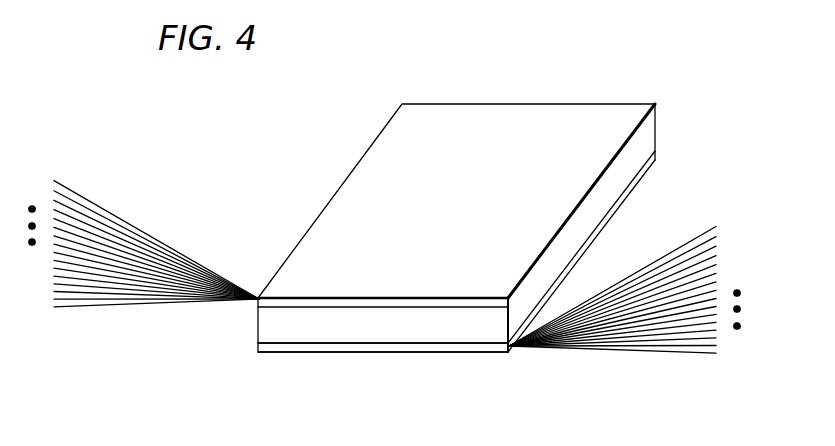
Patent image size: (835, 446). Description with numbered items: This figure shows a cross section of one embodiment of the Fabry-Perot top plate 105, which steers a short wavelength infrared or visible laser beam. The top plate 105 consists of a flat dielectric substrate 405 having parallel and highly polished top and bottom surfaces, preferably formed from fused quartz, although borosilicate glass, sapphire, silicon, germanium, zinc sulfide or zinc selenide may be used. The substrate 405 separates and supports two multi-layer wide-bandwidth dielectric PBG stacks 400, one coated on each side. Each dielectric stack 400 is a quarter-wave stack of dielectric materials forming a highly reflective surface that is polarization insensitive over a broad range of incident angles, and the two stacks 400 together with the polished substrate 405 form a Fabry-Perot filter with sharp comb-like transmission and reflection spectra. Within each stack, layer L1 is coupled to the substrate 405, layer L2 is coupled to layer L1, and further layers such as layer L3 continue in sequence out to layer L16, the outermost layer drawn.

The Fabry-Perot top plate 105 is at (284, 128).
The dielectric PBG stack 400 is at (258, 348).
The substrate 405 is at (258, 322).
The layer L1 is at (384, 278).
The layer L2 is at (384, 289).
The layer L3 is at (384, 296).
The layer L16 is at (384, 265).